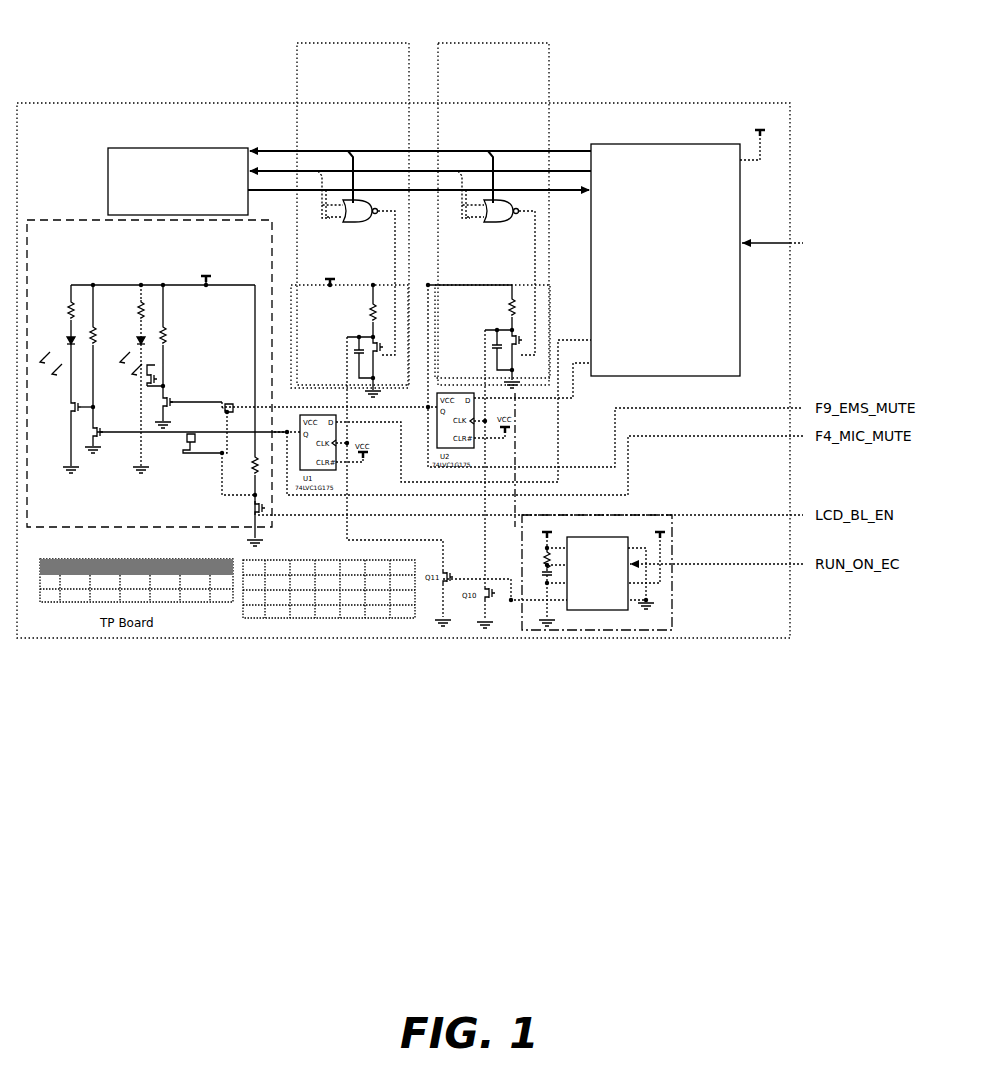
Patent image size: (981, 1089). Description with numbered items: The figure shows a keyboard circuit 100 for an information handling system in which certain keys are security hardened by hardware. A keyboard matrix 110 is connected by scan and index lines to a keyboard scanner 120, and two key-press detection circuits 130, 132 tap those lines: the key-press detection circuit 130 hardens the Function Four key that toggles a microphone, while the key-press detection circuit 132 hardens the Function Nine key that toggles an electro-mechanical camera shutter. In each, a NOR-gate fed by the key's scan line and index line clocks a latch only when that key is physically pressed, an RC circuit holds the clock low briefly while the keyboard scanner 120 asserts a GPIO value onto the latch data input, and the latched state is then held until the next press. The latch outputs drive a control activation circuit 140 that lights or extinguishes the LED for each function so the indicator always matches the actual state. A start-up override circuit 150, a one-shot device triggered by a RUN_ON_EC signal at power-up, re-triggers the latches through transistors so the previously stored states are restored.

The keyboard circuit 100 is at (111, 733).
The keyboard matrix 110 is at (135, 148).
The keyboard scanner 120 is at (606, 148).
The key-press detection circuit 130 is at (350, 220).
The key-press detection circuit 132 is at (488, 215).
The control activation circuit 140 is at (68, 219).
The start-up override circuit 150 is at (527, 633).